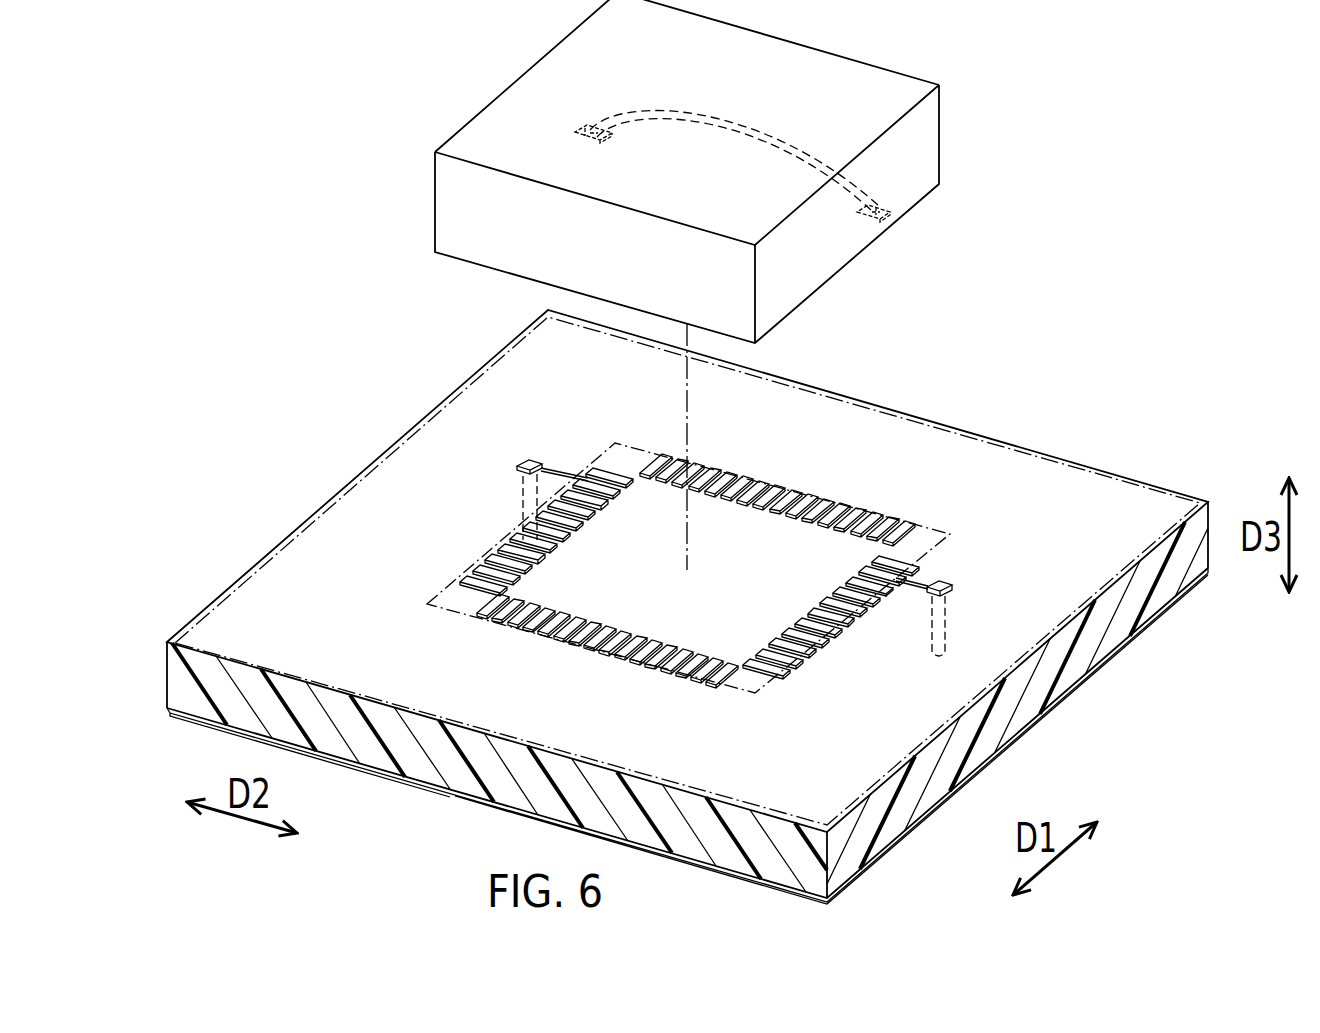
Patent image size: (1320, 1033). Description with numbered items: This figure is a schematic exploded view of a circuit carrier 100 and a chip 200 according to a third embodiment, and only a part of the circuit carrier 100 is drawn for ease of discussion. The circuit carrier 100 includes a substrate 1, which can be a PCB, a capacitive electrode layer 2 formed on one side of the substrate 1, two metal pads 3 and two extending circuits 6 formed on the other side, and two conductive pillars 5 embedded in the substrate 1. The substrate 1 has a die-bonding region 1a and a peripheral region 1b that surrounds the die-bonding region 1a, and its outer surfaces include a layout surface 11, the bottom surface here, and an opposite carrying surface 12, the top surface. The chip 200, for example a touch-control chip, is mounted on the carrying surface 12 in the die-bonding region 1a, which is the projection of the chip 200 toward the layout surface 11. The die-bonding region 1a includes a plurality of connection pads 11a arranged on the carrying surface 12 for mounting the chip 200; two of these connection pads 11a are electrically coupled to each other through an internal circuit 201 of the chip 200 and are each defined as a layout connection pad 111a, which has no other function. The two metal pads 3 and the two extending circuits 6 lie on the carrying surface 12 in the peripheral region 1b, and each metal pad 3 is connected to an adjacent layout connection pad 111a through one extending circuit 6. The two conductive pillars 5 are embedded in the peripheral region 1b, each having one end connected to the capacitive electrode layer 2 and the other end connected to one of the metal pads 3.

The circuit carrier 100 is at (664, 607).
The substrate 1 is at (166, 672).
The die-bonding region 1a is at (424, 600).
The peripheral region 1b is at (919, 420).
The layout surface 11 is at (167, 713).
The connection pads 11a is at (752, 679).
The carrying surface 12 is at (237, 622).
The layout connection pad 111a is at (598, 485).
The capacitive electrode layer 2 is at (430, 792).
The metal pads 3 is at (519, 464).
The conductive pillars 5 is at (524, 503).
The extending circuits 6 is at (561, 470).
The chip 200 is at (850, 64).
The internal circuit 201 is at (878, 208).